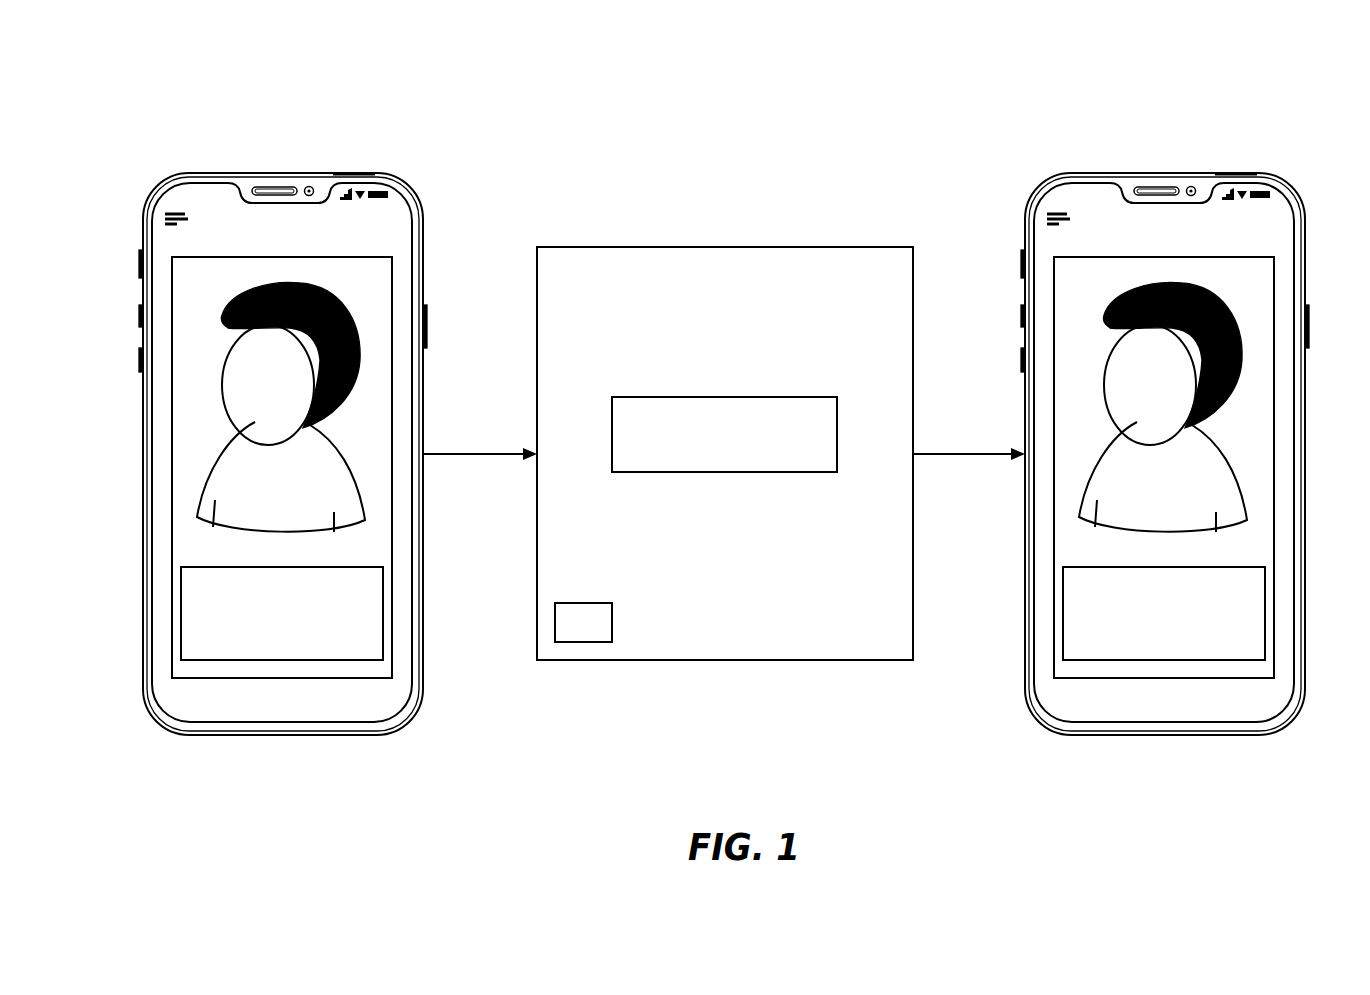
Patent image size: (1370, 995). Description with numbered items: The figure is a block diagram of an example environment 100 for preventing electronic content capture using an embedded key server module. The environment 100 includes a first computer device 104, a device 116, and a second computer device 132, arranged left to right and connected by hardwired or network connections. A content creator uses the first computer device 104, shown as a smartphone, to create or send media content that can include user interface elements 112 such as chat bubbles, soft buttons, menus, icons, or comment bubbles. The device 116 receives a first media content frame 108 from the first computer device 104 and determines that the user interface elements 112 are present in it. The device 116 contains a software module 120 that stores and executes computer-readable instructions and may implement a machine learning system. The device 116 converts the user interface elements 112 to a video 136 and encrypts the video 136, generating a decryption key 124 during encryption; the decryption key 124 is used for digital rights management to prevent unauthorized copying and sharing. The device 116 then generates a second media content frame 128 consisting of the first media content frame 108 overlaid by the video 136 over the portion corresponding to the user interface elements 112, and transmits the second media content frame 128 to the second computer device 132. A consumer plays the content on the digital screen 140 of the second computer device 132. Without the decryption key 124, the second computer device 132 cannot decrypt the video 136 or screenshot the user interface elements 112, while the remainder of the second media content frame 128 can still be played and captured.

The environment 100 is at (150, 106).
The first computer device 104 is at (312, 173).
The first media content frame 108 is at (468, 454).
The user interface elements 112 is at (181, 611).
The device 116 is at (708, 292).
The software module 120 is at (708, 444).
The decryption key 124 is at (566, 632).
The second media content frame 128 is at (959, 454).
The second computer device 132 is at (1194, 425).
The video 136 is at (1215, 613).
The digital screen 140 is at (1210, 467).